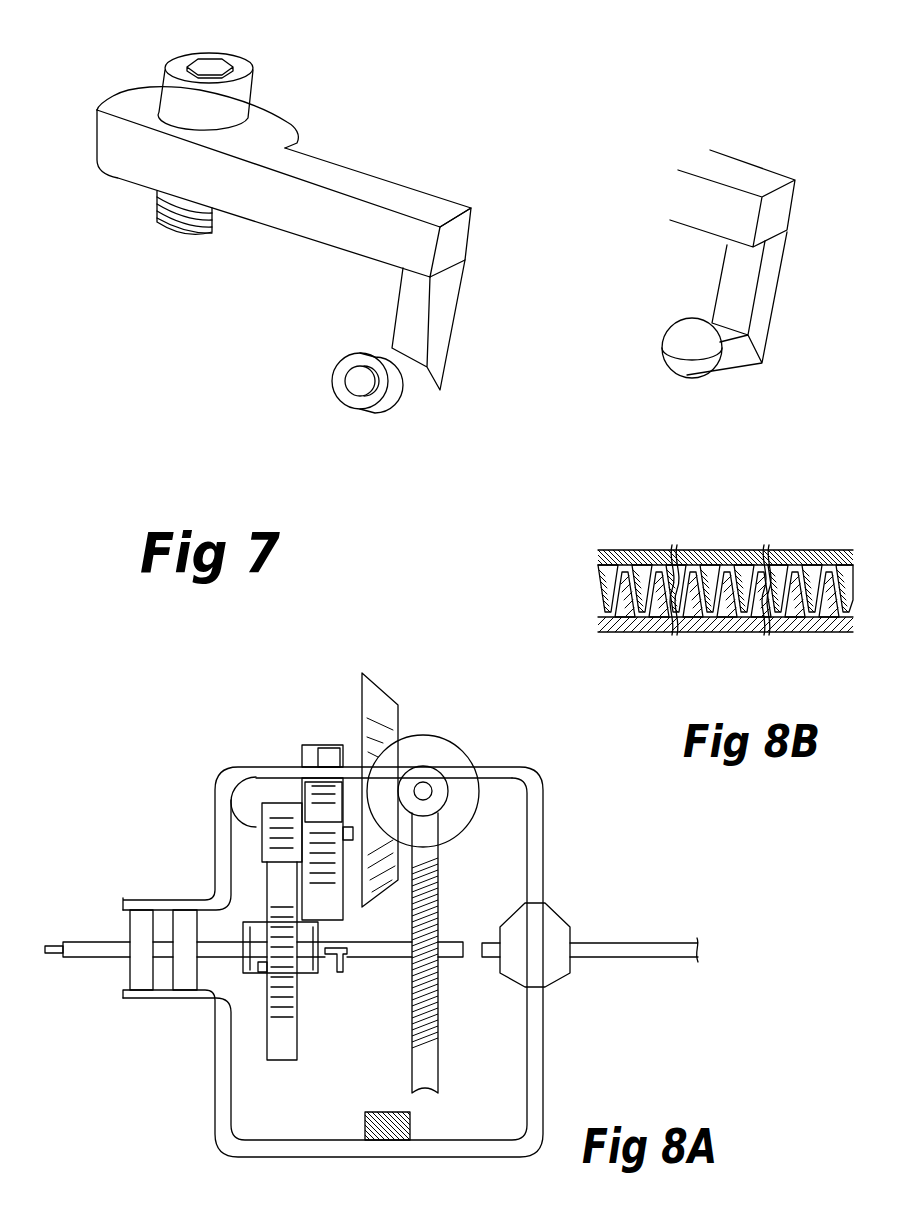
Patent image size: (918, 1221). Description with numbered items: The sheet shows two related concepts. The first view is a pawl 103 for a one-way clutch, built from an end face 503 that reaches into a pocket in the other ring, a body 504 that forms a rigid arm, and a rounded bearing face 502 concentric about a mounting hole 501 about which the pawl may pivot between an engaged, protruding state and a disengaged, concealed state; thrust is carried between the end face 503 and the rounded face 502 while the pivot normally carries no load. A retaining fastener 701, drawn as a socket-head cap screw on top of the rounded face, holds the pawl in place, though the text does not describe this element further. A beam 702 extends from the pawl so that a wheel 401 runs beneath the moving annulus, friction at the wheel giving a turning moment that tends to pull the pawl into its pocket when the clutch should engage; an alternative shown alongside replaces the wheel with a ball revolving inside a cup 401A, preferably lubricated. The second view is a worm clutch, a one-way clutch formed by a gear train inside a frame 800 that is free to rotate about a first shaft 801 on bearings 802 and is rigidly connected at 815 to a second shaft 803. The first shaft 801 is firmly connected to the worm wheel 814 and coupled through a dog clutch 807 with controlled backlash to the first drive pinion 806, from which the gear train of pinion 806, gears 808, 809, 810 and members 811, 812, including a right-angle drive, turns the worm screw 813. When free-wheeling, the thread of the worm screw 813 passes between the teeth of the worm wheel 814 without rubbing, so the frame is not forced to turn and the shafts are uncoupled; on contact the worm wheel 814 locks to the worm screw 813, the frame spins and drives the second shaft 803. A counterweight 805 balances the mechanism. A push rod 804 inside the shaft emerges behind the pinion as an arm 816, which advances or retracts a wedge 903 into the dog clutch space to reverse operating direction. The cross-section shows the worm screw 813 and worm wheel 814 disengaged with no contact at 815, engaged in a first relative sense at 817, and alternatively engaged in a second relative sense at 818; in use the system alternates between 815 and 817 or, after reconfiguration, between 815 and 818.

In FIG. 7, the pawl 103 is at (338, 160).
In FIG. 7, the wheel 401 is at (328, 377).
In FIG. 7, the ball revolving inside a cup 401A is at (663, 360).
In FIG. 7, the mounting hole 501 is at (130, 180).
In FIG. 7, the rounded bearing face 502 is at (103, 110).
In FIG. 7, the end face 503 is at (460, 225).
In FIG. 7, the body 504 is at (275, 200).
In FIG. 7, the socket head bolt 701 is at (165, 67).
In FIG. 7, the beam 702 is at (453, 337).
In FIG. 8A, the frame 800 is at (217, 1147).
In FIG. 8A, the first shaft 801 is at (80, 960).
In FIG. 8A, the bearings 802 is at (148, 973).
In FIG. 8A, the second shaft 803 is at (677, 957).
In FIG. 8A, the push rod 804 is at (45, 947).
In FIG. 8A, the counterweight 805 is at (350, 1152).
In FIG. 8A, the first drive pinion 806 is at (263, 1075).
In FIG. 8A, the dog clutch 807 is at (250, 977).
In FIG. 8A, the gear train gear 808 is at (232, 812).
In FIG. 8A, the gear train gear 809 is at (307, 747).
In FIG. 8A, the gear train gear 810 is at (357, 720).
In FIG. 8A, the gear train member 811 is at (407, 660).
In FIG. 8A, the gear train member 812 is at (423, 732).
In FIG. 8A, the worm screw 813 is at (450, 777).
In FIG. 8B, the worm screw 813 is at (715, 550).
In FIG. 8A, the worm wheel 814 is at (440, 1057).
In FIG. 8B, the worm wheel 814 is at (638, 630).
In FIG. 8A, the rigid connection 815 is at (547, 908).
In FIG. 8B, the rigid connection 815 is at (598, 605).
In FIG. 8A, the arm 816 is at (353, 960).
In FIG. 8B, the engaged position in a first relative sense 817 is at (713, 620).
In FIG. 8B, the engaged position in a second relative sense 818 is at (792, 617).
In FIG. 8A, the wedge 903 is at (308, 968).